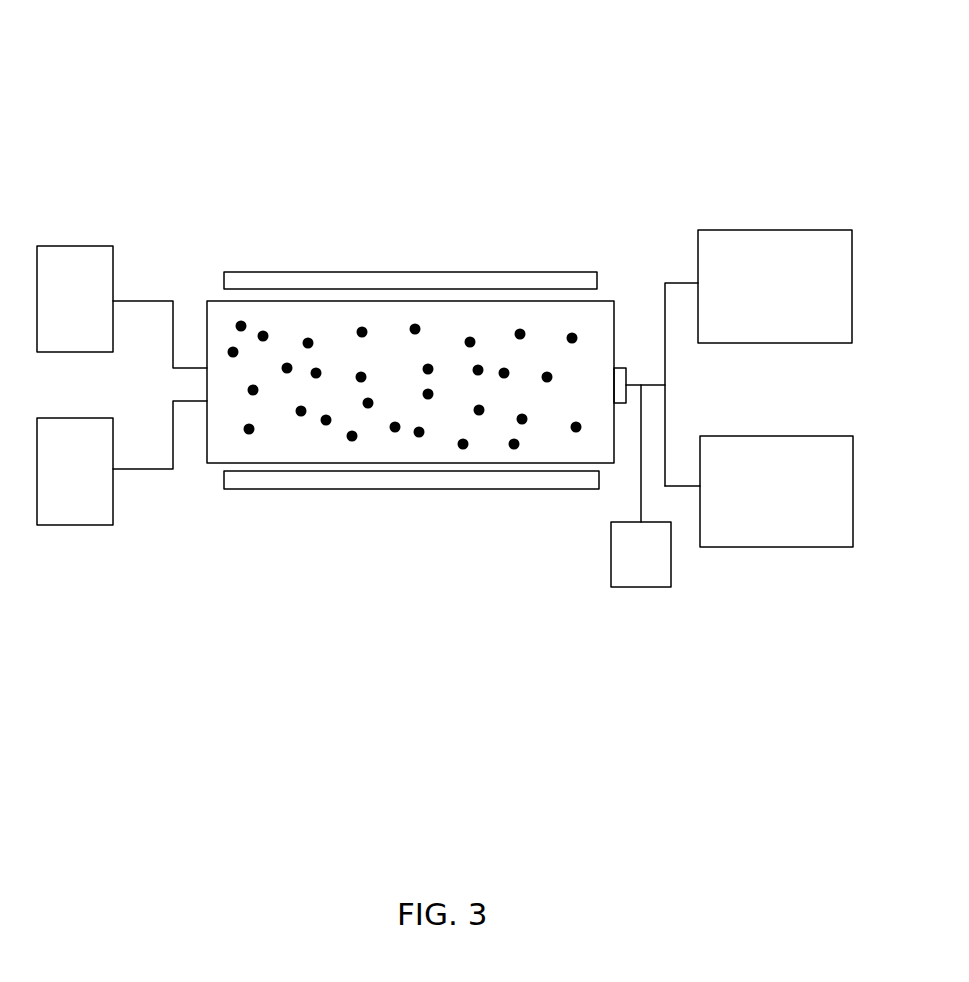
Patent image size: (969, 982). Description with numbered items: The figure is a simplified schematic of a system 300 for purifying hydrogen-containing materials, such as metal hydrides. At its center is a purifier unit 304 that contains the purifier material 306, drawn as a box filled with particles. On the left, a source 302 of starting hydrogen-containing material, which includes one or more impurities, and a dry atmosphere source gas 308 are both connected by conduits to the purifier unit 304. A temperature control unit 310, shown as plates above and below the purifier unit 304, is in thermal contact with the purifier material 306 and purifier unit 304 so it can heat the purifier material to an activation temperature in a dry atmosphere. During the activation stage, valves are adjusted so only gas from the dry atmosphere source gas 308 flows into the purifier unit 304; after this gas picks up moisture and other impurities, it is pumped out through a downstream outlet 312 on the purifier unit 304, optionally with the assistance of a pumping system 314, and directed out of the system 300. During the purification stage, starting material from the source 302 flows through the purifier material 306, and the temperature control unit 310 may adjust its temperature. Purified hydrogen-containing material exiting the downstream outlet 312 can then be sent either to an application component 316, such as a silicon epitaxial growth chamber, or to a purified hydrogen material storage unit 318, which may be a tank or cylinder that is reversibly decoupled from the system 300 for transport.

The system 300 is at (85, 46).
The source of starting hydrogen-containing material 302 is at (78, 245).
The purifier unit 304 is at (207, 317).
The purifier material 306 is at (354, 440).
The dry atmosphere source gas 308 is at (90, 525).
The temperature control unit 310 is at (565, 271).
The downstream outlet 312 is at (621, 368).
The pumping system 314 is at (648, 587).
The application component 316 is at (782, 230).
The purified hydrogen material storage unit 318 is at (803, 547).